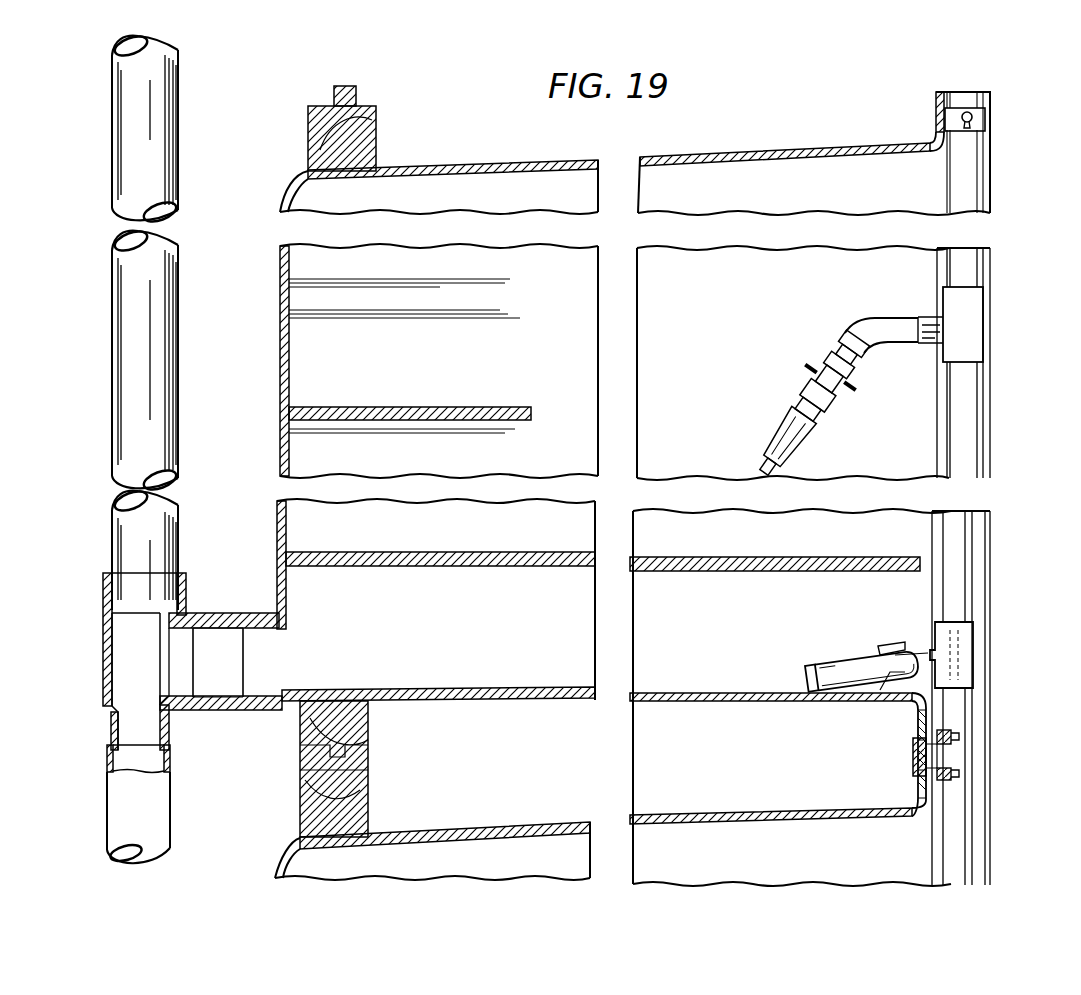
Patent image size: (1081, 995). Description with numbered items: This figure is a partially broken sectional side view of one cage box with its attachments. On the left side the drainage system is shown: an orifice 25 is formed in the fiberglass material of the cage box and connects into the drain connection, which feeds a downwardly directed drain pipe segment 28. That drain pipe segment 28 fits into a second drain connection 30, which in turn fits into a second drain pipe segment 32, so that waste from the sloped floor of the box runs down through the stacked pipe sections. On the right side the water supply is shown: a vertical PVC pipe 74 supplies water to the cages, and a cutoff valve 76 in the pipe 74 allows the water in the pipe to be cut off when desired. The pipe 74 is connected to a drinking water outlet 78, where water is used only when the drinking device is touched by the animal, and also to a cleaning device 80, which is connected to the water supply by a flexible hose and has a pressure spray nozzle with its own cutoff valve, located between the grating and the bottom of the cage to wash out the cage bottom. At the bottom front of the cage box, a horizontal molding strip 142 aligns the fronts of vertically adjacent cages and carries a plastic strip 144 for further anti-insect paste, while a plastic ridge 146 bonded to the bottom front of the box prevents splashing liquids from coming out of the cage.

The orifice 25 is at (245, 676).
The drain pipe segment 28 is at (121, 437).
The second drain connection 30 is at (104, 614).
The second drain pipe segment 32 is at (107, 813).
The vertical PVC pipe 74 is at (985, 433).
The cutoff valve 76 is at (987, 125).
The drinking water outlet 78 is at (796, 393).
The cleaning device 80 is at (853, 665).
The horizontal molding strip 142 is at (912, 758).
The plastic strip 144 is at (954, 737).
The plastic ridge 146 is at (937, 694).